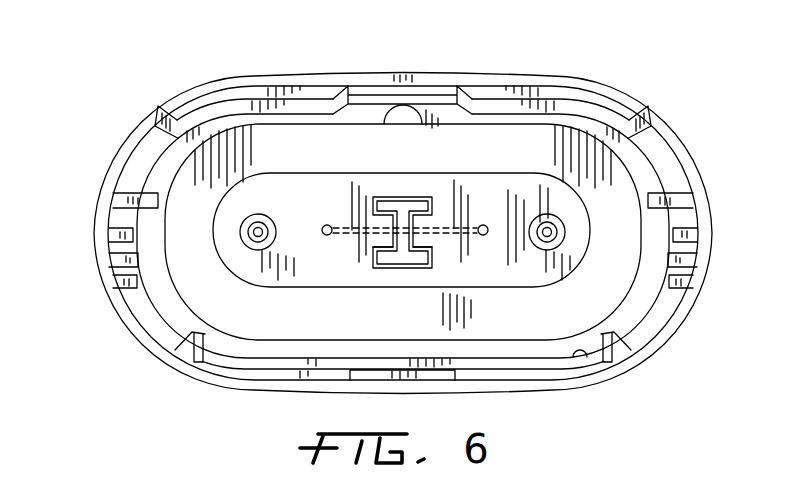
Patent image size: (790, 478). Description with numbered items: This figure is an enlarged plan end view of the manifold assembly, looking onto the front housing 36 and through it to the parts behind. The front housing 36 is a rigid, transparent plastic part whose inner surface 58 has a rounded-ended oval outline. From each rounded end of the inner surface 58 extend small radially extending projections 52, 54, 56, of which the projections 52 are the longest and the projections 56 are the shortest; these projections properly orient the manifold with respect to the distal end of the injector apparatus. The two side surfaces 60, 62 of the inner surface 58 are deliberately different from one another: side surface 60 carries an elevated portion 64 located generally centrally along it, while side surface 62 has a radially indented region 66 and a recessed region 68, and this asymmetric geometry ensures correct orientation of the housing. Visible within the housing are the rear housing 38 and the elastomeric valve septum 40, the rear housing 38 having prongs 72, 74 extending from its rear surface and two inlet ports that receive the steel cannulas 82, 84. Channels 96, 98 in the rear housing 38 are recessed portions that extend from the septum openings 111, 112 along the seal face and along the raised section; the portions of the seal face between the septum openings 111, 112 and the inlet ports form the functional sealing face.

The front housing 36 is at (692, 142).
The rear housing 38 is at (257, 331).
The valve septum 40 is at (255, 283).
The radially extending projections 52 is at (135, 191).
The radially extending projections 54 is at (112, 222).
The radially extending projections 56 is at (118, 283).
The inner surface 58 is at (584, 364).
The side surface 60 is at (298, 384).
The side surface 62 is at (380, 66).
The elevated portion 64 is at (437, 381).
The radially indented region 66 is at (255, 103).
The recessed region 68 is at (410, 76).
The prong 72 is at (403, 268).
The prong 74 is at (405, 214).
The cannula 82 is at (246, 241).
The cannula 84 is at (561, 243).
The channel 96 is at (357, 237).
The channel 98 is at (465, 237).
The septum opening 111 is at (327, 224).
The septum opening 112 is at (484, 224).